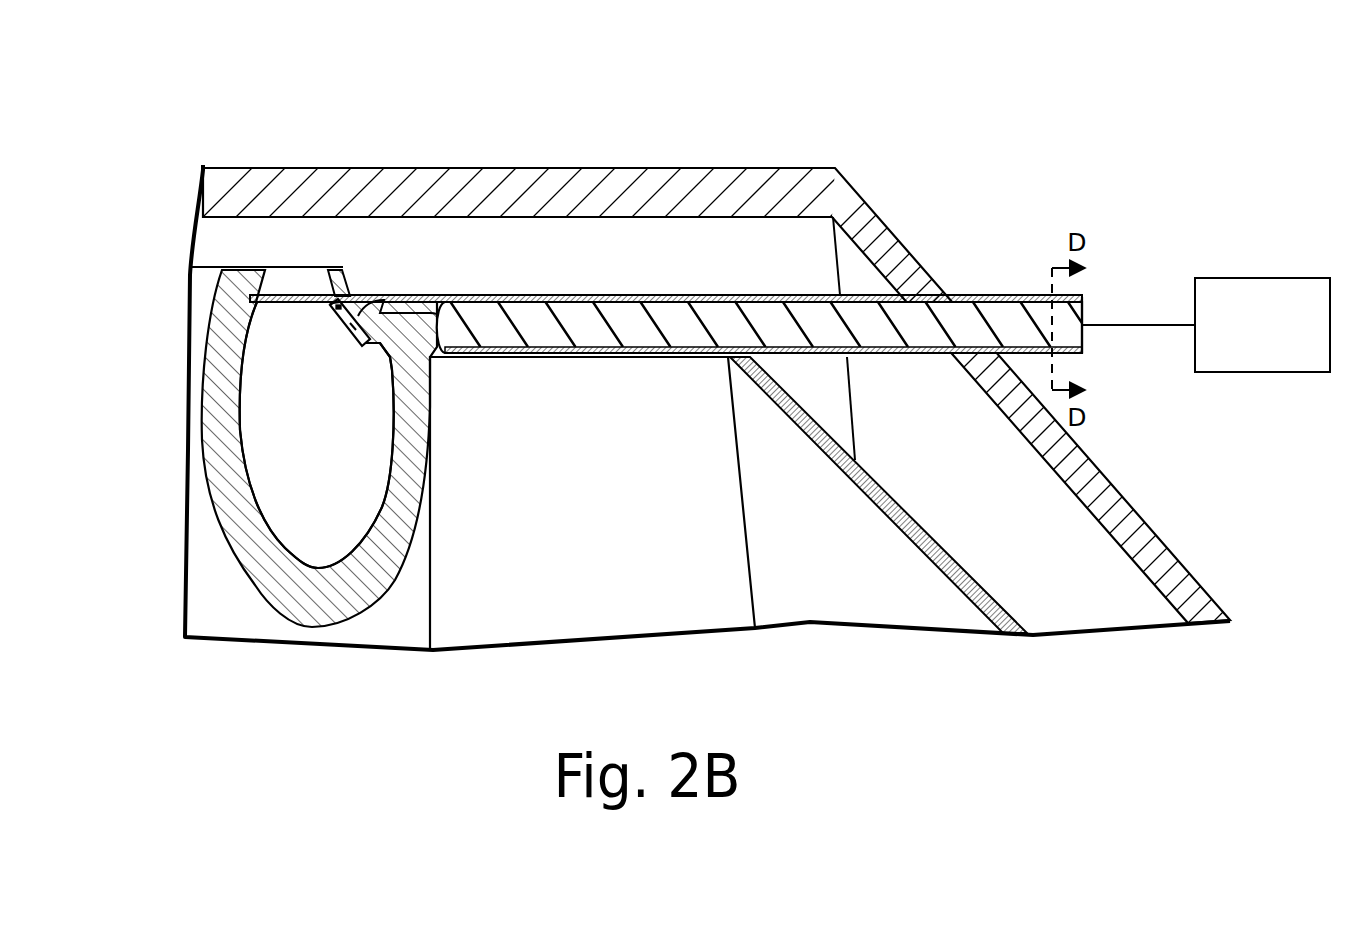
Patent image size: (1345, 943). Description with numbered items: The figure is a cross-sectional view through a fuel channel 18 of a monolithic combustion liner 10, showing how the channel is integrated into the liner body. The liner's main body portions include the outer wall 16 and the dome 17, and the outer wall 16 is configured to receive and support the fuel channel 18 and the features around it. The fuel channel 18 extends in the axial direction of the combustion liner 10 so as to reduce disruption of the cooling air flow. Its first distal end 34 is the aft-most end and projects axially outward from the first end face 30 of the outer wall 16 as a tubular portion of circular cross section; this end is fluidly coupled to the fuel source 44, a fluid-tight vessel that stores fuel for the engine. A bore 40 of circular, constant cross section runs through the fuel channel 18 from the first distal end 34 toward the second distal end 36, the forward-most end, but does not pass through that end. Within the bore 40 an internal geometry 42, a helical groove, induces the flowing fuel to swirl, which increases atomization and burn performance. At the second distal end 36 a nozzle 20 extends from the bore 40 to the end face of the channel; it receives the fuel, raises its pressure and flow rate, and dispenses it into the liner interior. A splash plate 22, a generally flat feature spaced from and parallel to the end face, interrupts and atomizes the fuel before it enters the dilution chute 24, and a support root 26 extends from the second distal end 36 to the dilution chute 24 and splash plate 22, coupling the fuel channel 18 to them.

The combustion liner 10 is at (195, 110).
The outer wall 16 is at (703, 544).
The dome 17 is at (902, 582).
The fuel channel 18 is at (993, 282).
The nozzle 20 is at (363, 337).
The splash plate 22 is at (350, 323).
The dilution chute 24 is at (218, 383).
The support root 26 is at (333, 303).
The first end face 30 is at (940, 542).
The first distal end 34 is at (1083, 303).
The second distal end 36 is at (359, 300).
The bore 40 is at (862, 322).
The internal geometry 42 is at (612, 324).
The fuel source 44 is at (1206, 325).